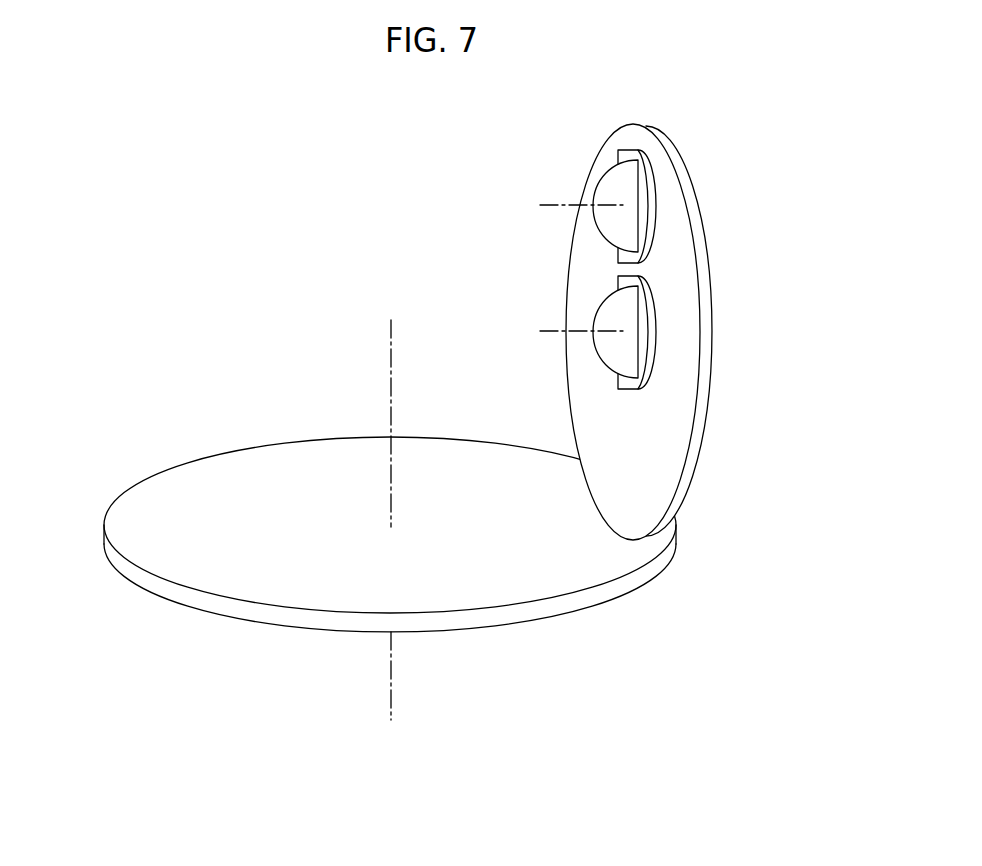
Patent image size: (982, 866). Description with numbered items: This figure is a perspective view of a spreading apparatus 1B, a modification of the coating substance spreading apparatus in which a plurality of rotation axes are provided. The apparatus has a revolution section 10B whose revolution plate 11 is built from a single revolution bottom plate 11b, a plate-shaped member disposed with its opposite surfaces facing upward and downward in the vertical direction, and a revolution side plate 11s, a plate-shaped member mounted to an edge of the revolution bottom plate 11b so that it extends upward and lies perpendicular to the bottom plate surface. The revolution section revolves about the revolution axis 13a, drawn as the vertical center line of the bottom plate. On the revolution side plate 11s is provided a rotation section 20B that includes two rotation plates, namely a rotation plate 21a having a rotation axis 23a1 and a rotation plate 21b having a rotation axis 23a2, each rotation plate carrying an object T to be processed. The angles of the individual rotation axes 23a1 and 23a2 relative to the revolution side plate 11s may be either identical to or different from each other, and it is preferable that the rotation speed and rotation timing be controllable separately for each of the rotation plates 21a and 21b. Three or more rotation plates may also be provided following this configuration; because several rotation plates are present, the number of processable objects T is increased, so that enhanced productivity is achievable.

The spreading apparatus 1B is at (138, 209).
The revolution section 10B is at (138, 636).
The revolution plate 11 is at (780, 512).
The revolution side plate 11s is at (690, 490).
The revolution bottom plate 11b is at (650, 578).
The revolution axis 13a is at (391, 366).
The rotation section 20B is at (472, 218).
The rotation plate 21a is at (652, 304).
The rotation plate 21b is at (650, 166).
The rotation axis 23a1 is at (557, 333).
The rotation axis 23a2 is at (557, 200).
The object T is at (596, 173).